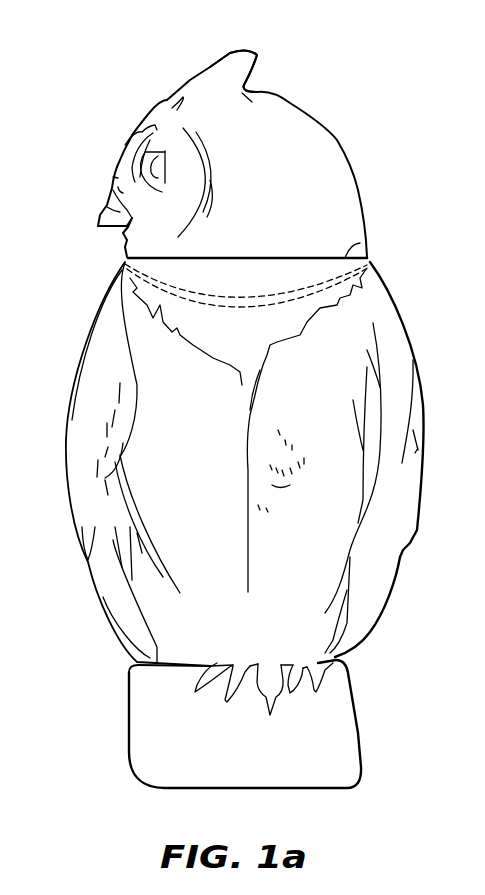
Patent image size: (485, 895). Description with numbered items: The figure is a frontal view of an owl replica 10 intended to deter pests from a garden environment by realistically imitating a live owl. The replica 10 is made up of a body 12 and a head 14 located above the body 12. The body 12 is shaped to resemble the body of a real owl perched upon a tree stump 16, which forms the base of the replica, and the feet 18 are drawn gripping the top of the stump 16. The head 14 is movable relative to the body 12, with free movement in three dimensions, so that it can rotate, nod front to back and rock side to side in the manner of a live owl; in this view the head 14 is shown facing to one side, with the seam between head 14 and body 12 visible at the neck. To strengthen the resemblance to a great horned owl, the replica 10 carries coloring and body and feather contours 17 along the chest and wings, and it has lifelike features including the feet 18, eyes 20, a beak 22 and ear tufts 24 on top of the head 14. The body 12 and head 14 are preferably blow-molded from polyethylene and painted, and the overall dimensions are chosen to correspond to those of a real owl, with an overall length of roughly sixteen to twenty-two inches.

The owl replica 10 is at (96, 91).
The body 12 is at (388, 305).
The head 14 is at (327, 148).
The tree stump 16 is at (340, 770).
The body and feather contours 17 is at (125, 270).
The feet 18 is at (270, 710).
The eyes 20 is at (152, 168).
The beak 22 is at (107, 208).
The ear tufts 24 is at (225, 68).